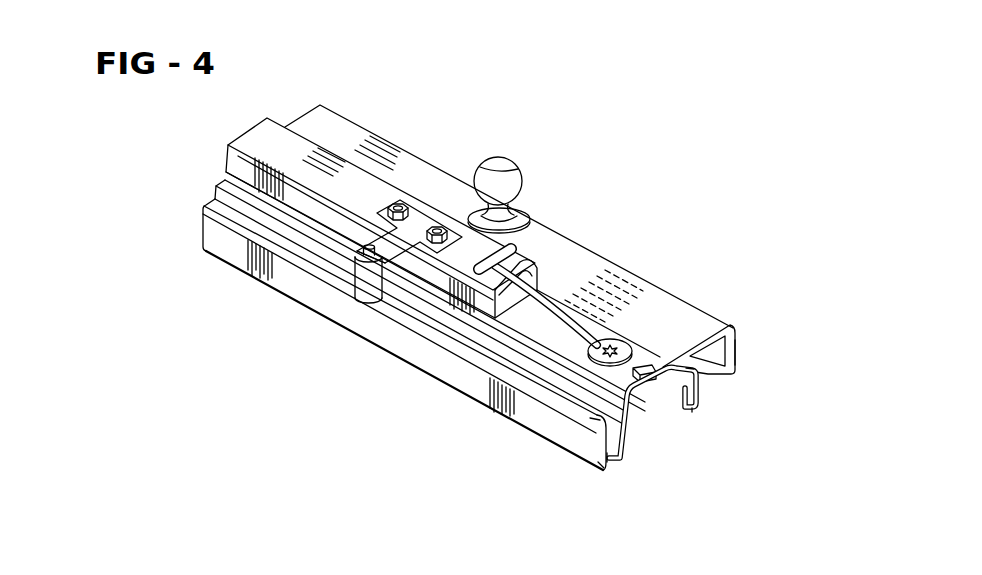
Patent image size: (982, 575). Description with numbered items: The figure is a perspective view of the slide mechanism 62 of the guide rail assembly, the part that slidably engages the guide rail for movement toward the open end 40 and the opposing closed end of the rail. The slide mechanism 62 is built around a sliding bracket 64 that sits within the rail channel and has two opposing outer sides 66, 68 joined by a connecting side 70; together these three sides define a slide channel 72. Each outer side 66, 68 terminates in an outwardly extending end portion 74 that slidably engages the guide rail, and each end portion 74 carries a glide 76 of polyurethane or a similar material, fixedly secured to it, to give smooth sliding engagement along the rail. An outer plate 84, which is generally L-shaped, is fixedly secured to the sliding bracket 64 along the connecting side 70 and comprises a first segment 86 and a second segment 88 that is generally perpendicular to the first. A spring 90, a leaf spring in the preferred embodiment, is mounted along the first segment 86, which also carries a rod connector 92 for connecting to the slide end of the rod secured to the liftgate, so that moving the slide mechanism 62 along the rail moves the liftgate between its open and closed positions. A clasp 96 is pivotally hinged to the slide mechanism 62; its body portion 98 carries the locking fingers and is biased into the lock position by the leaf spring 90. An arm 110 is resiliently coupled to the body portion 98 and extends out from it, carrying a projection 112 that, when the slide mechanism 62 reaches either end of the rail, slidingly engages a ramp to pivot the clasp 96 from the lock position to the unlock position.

The open end 40 is at (457, 276).
The slide mechanism 62 is at (319, 92).
The sliding bracket 64 is at (590, 436).
The outer side 66 is at (600, 455).
The outer side 68 is at (706, 373).
The connecting side 70 is at (665, 363).
The slide channel 72 is at (649, 435).
The end portion 74 is at (612, 450).
The glide 76 is at (204, 224).
The outer plate 84 is at (735, 331).
The first segment 86 is at (588, 289).
The second segment 88 is at (740, 355).
The spring 90 is at (545, 298).
The rod connector 92 is at (528, 173).
The clasp 96 is at (222, 128).
The body portion 98 is at (390, 205).
The arm 110 is at (387, 257).
The projection 112 is at (352, 279).